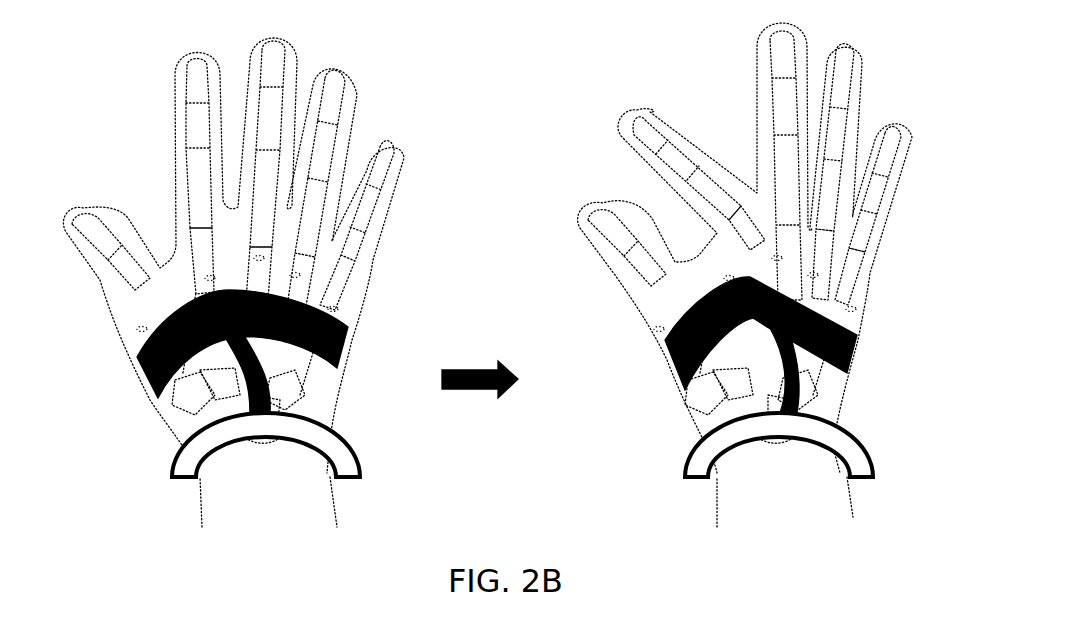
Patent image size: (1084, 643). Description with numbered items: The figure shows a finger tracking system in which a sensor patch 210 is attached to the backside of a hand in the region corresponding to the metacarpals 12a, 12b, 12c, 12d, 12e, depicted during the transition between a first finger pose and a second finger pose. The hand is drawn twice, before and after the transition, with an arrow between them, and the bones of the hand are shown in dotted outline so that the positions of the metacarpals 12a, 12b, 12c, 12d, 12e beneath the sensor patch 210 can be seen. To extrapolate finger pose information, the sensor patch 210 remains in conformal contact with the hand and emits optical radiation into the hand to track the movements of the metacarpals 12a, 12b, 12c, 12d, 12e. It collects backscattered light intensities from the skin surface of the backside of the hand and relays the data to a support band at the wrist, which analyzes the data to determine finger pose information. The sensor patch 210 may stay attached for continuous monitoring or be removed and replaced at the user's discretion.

The metacarpal 12a is at (140, 328).
The metacarpal 12b is at (208, 278).
The metacarpal 12c is at (257, 258).
The metacarpal 12d is at (297, 275).
The metacarpal 12e is at (335, 309).
The sensor patch 210 is at (137, 358).